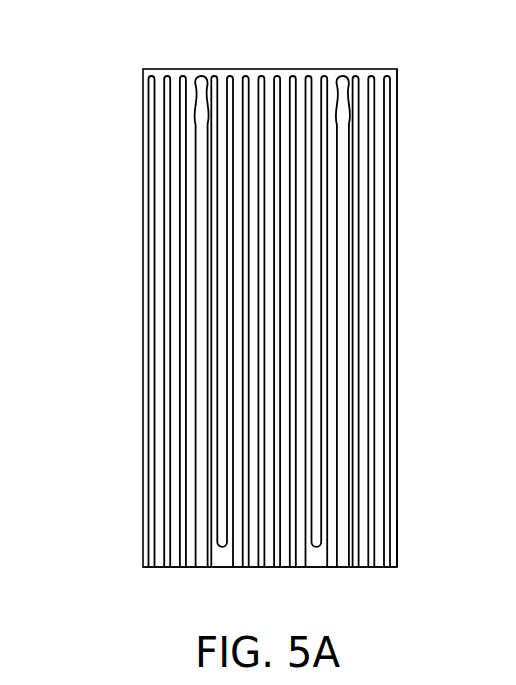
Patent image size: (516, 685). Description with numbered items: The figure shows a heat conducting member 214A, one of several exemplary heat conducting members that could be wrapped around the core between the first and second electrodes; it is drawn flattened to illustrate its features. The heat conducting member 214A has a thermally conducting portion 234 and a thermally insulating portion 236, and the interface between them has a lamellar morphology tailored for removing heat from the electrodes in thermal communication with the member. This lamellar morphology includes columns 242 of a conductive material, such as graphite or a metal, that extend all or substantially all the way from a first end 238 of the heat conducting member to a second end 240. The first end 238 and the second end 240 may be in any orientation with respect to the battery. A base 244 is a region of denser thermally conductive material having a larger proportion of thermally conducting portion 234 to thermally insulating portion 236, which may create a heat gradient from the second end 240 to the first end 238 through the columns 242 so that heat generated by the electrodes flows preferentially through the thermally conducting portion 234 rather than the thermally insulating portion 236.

The heat conducting member 214A is at (274, 311).
The second end 240 is at (160, 33).
The thermally insulating portion 236 is at (303, 291).
The thermally conducting portion 234 is at (370, 128).
The columns 242 is at (398, 273).
The first end 238 is at (158, 597).
The base 244 is at (456, 543).